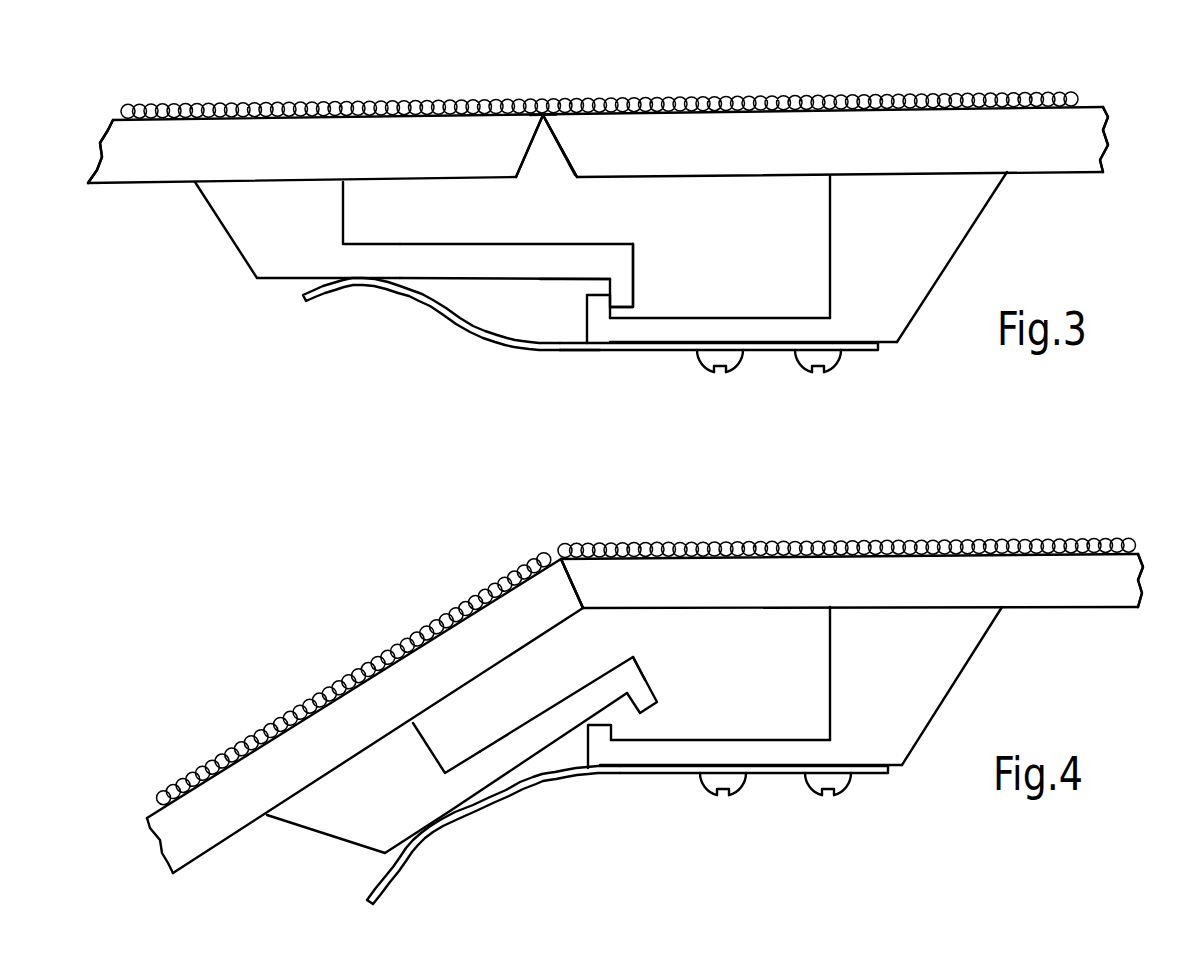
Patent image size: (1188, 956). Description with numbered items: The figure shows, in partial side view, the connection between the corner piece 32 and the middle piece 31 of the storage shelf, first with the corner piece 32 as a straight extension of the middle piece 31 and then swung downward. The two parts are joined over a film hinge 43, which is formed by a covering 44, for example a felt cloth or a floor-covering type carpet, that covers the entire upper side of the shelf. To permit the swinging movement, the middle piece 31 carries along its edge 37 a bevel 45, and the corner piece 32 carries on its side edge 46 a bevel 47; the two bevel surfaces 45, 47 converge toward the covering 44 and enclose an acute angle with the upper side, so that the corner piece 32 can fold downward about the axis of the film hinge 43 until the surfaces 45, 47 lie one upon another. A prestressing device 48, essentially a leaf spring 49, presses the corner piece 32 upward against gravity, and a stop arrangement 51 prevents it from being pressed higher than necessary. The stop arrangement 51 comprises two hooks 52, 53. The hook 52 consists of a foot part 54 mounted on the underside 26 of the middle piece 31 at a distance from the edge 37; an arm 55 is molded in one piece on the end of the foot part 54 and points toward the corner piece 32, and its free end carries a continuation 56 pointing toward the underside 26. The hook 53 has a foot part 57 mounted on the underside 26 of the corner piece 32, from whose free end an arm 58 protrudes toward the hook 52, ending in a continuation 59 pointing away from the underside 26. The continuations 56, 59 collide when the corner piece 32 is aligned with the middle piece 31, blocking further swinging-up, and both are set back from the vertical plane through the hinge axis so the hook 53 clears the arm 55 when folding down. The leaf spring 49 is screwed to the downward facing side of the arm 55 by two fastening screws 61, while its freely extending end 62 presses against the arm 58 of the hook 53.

In FIG. 3, the underside 26 is at (1040, 173).
In FIG. 4, the underside 26 is at (1063, 608).
In FIG. 3, the middle piece 31 is at (888, 153).
In FIG. 4, the middle piece 31 is at (982, 595).
In FIG. 3, the corner piece 32 is at (352, 158).
In FIG. 4, the corner piece 32 is at (365, 716).
In FIG. 3, the edge 37 is at (566, 150).
In FIG. 3, the film hinge 43 is at (566, 89).
In FIG. 4, the film hinge 43 is at (548, 528).
In FIG. 3, the covering 44 is at (897, 92).
In FIG. 4, the covering 44 is at (972, 538).
In FIG. 3, the bevel 45 is at (572, 182).
In FIG. 4, the bevel 45 is at (580, 595).
In FIG. 3, the side edge 46 is at (527, 152).
In FIG. 4, the side edge 46 is at (567, 577).
In FIG. 3, the bevel 47 is at (523, 158).
In FIG. 3, the prestressing device 48 is at (531, 366).
In FIG. 4, the prestressing device 48 is at (513, 806).
In FIG. 3, the leaf spring 49 is at (583, 353).
In FIG. 3, the stop arrangement 51 is at (690, 272).
In FIG. 4, the stop arrangement 51 is at (606, 661).
In FIG. 3, the hook 52 is at (702, 301).
In FIG. 4, the hook 52 is at (657, 728).
In FIG. 3, the hook 53 is at (551, 295).
In FIG. 4, the hook 53 is at (659, 663).
In FIG. 3, the foot part 54 is at (908, 255).
In FIG. 4, the foot part 54 is at (910, 682).
In FIG. 3, the arm 55 is at (768, 328).
In FIG. 4, the arm 55 is at (787, 762).
In FIG. 3, the continuation 56 is at (598, 308).
In FIG. 4, the continuation 56 is at (600, 735).
In FIG. 3, the foot part 57 is at (258, 228).
In FIG. 4, the foot part 57 is at (385, 813).
In FIG. 3, the arm 58 is at (397, 262).
In FIG. 4, the arm 58 is at (535, 723).
In FIG. 3, the continuation 59 is at (628, 288).
In FIG. 4, the continuation 59 is at (647, 697).
In FIG. 3, the fastening screws 61 is at (835, 360).
In FIG. 4, the fastening screws 61 is at (737, 792).
In FIG. 3, the freely extending end 62 is at (327, 297).
In FIG. 4, the freely extending end 62 is at (390, 872).